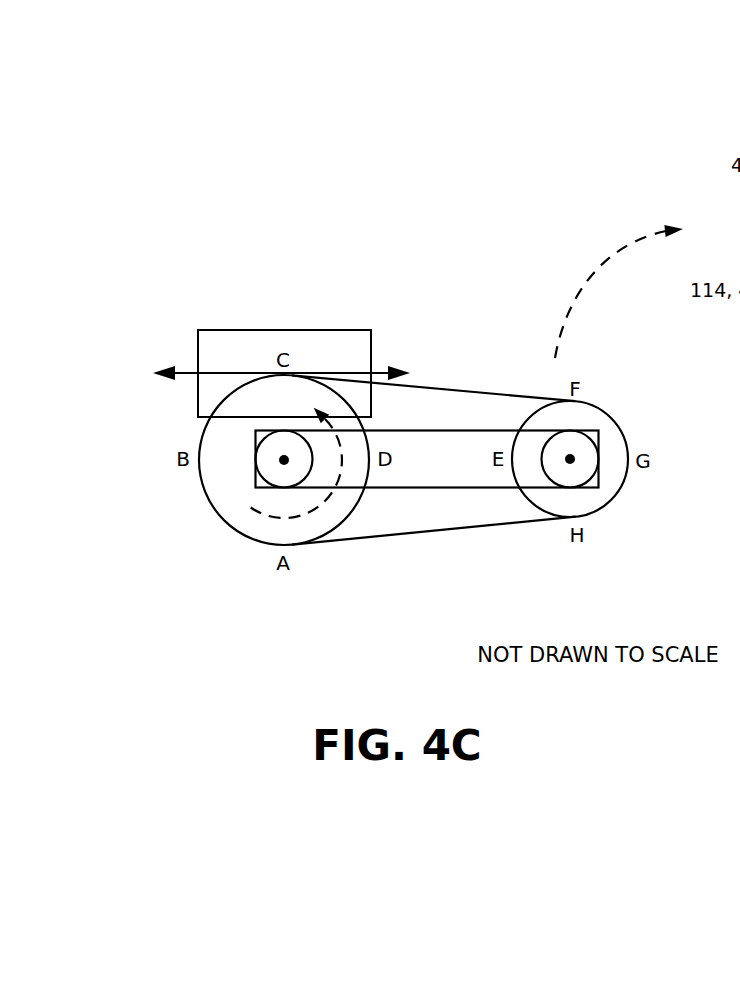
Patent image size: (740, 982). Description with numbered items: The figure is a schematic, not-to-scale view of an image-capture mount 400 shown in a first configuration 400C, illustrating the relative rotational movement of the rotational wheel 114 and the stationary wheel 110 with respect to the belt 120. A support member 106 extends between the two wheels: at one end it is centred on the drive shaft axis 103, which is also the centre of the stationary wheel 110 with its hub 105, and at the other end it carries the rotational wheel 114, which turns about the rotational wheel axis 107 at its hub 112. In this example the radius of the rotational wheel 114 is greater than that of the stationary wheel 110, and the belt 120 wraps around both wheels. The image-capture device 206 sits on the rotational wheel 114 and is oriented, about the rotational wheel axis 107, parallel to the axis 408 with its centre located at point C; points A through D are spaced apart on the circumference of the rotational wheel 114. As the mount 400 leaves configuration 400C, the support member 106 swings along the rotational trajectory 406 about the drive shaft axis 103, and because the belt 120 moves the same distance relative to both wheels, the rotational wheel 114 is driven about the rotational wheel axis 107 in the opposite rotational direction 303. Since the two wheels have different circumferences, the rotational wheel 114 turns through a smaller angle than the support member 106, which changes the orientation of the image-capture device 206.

The configuration 400C is at (220, 222).
The mount 400 is at (214, 282).
The image-capture device 206 is at (253, 330).
The axis 408 is at (219, 376).
The rotational wheel 114 is at (273, 533).
The rotational wheel axis 107 is at (283, 461).
The hub 112 is at (283, 477).
The rotational direction 303 is at (338, 490).
The support member 106 is at (430, 473).
The belt 120 is at (453, 530).
The stationary wheel 110 is at (582, 505).
The pulley hub 105 is at (577, 477).
The drive shaft axis 103 is at (572, 461).
The rotational trajectory 406 is at (591, 274).